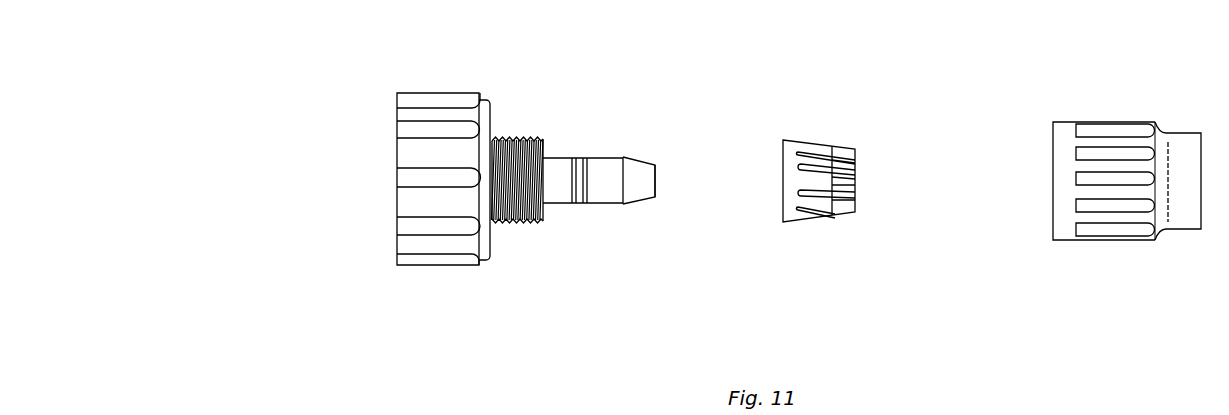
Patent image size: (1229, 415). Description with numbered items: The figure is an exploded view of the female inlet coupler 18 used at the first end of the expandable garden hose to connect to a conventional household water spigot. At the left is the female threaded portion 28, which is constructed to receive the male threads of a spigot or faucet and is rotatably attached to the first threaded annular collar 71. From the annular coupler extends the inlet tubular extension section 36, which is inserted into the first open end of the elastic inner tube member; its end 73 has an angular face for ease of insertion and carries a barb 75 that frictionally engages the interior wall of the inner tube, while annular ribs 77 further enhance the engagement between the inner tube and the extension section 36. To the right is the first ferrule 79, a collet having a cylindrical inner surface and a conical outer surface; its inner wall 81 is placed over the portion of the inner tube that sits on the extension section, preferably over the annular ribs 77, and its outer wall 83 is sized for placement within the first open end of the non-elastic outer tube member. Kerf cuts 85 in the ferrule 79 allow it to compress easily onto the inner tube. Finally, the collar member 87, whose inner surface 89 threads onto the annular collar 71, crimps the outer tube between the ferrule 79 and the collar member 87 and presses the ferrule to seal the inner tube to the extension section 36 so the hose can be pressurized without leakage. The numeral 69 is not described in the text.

The female inlet coupler 18 is at (272, 167).
The female threaded portion 28 is at (397, 152).
The gripping ribs 69 is at (457, 92).
The first threaded annular collar 71 is at (510, 225).
The inlet tubular extension section 36 is at (608, 203).
The annular ribs 77 is at (572, 204).
The barb 75 is at (623, 157).
The end 73 is at (655, 166).
The first ferrule 79 is at (813, 164).
The inner wall 81 is at (783, 163).
The outer wall 83 is at (842, 147).
The kerf cuts 85 is at (837, 204).
The collar member 87 is at (1102, 122).
The inner surface 89 is at (1052, 180).